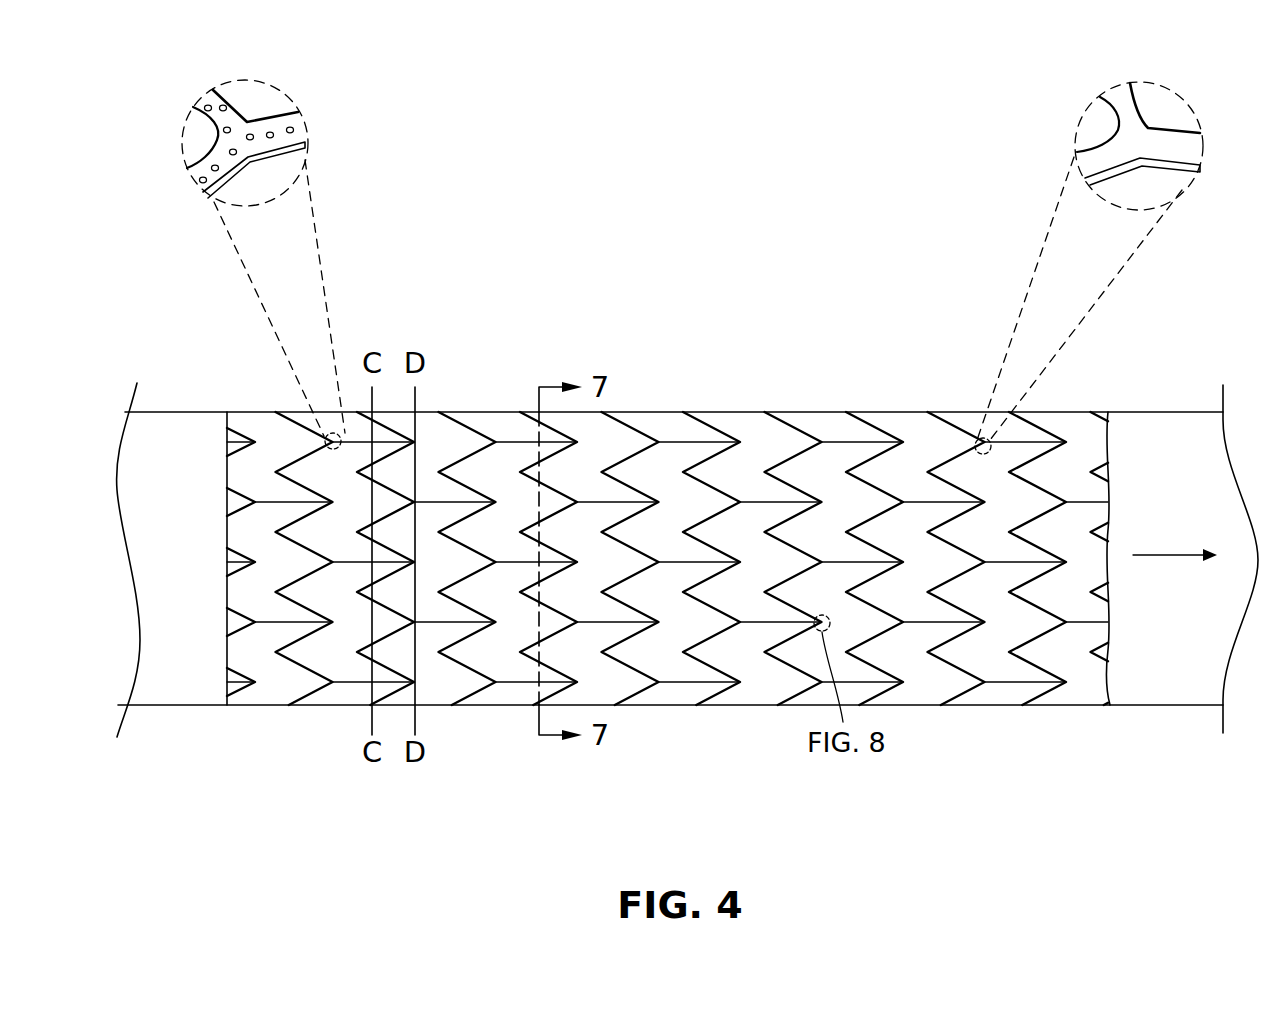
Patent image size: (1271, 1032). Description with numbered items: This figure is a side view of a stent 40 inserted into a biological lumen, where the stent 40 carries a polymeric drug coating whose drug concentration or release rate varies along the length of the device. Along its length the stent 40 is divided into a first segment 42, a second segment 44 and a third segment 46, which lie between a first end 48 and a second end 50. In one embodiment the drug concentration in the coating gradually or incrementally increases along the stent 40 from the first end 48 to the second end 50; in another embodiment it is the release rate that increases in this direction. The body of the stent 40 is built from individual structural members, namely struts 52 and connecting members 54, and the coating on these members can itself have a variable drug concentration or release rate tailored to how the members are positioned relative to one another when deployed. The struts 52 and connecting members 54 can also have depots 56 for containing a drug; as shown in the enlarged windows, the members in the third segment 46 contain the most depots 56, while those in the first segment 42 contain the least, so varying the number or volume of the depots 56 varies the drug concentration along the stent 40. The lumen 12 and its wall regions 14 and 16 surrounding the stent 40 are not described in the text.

The body lumen (blood vessel) 12 is at (687, 576).
The vessel wall, first side 14 is at (170, 681).
The vessel wall, second side 16 is at (1180, 678).
The stent 40 is at (738, 295).
The first segment 42 is at (953, 458).
The second segment 44 is at (630, 572).
The third segment 46 is at (324, 439).
The first end 48 is at (1110, 683).
The second end 50 is at (227, 477).
The struts 52 is at (960, 433).
The connecting members 54 is at (508, 443).
The depots 56 is at (270, 134).